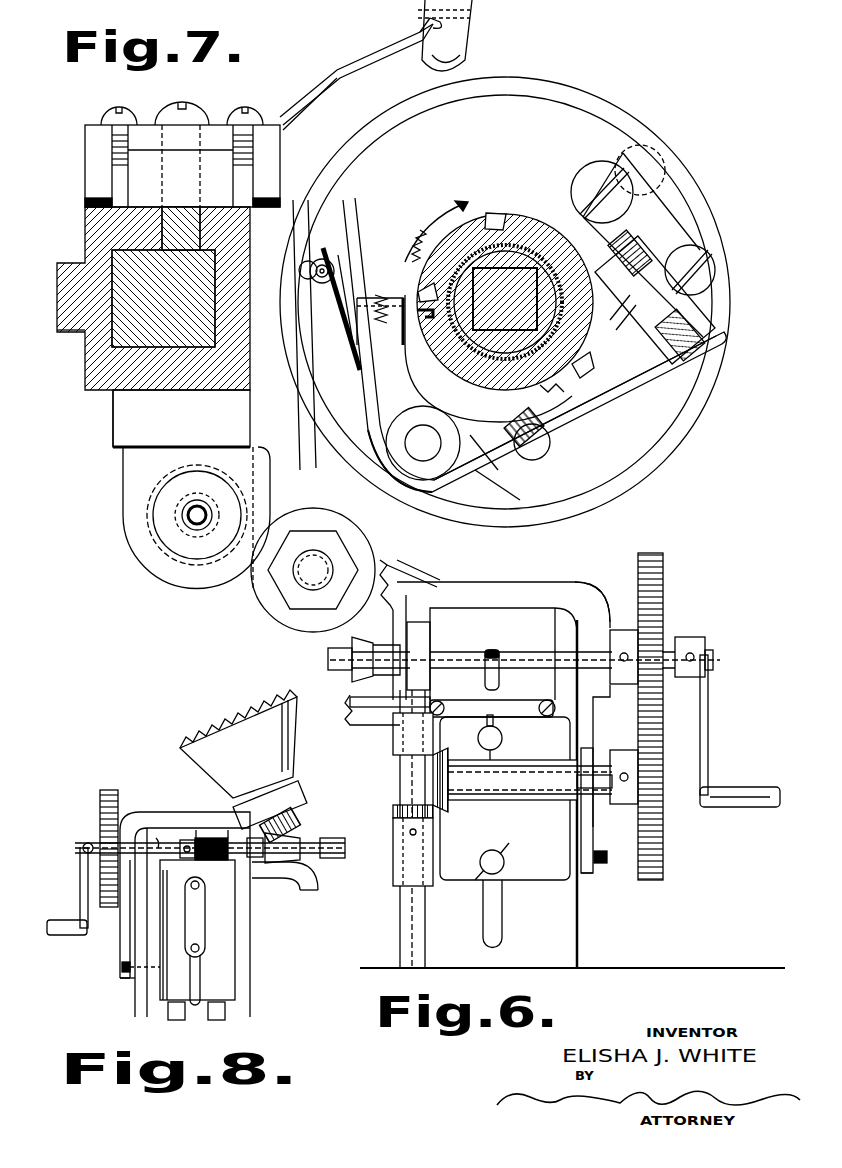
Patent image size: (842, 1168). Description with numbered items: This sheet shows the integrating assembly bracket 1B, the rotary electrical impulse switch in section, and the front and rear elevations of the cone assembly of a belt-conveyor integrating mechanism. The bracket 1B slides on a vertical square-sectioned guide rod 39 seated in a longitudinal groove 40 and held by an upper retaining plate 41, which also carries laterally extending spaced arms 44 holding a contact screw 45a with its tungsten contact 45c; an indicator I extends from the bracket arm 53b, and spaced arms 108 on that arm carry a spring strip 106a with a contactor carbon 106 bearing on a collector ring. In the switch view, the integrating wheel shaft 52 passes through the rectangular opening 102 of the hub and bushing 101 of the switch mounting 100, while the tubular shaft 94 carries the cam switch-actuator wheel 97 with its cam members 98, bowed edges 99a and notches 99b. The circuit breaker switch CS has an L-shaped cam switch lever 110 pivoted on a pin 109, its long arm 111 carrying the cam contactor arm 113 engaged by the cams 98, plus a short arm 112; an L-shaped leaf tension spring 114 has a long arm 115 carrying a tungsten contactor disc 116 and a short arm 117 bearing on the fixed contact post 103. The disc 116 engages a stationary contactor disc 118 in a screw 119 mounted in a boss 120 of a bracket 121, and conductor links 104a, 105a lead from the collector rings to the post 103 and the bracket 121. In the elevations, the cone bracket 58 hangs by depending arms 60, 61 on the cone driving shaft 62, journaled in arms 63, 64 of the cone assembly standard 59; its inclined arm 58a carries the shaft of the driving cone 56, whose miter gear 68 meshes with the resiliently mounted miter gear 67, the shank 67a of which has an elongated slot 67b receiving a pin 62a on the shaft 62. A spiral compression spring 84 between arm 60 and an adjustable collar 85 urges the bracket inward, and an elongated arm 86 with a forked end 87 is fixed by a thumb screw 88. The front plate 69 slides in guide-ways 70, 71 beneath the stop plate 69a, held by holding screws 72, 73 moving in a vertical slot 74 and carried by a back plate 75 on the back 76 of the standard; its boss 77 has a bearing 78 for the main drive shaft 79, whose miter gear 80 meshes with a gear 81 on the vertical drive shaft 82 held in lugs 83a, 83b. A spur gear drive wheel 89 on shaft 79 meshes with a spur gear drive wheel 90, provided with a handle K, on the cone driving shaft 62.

In FIG. 7, the arm 53b is at (148, 168).
In FIG. 7, the spaced arms 108 is at (292, 137).
In FIG. 7, the guide rod 39 is at (125, 330).
In FIG. 7, the upper retaining plate 41 is at (84, 380).
In FIG. 7, the longitudinal groove 40 is at (168, 350).
In FIG. 7, the integrating assembly bracket 1B is at (104, 440).
In FIG. 7, the laterally extending spaced arms 44 is at (163, 565).
In FIG. 7, the contact 45c is at (190, 518).
In FIG. 7, the contact screw 45a is at (196, 535).
In FIG. 7, the indicator I is at (305, 575).
In FIG. 7, the switch mounting 100 is at (690, 405).
In FIG. 7, the contactor carbon 106 is at (465, 57).
In FIG. 7, the spring strip 106a is at (355, 58).
In FIG. 7, the integrating wheel shaft 52 is at (535, 285).
In FIG. 7, the metal hub and bushing 101 is at (510, 262).
In FIG. 7, the tubular shaft 94 is at (560, 300).
In FIG. 7, the contactor teeth or cam members 98 is at (497, 214).
In FIG. 7, the bowed edges 99a is at (425, 276).
In FIG. 7, the notches 99b is at (555, 250).
In FIG. 7, the cam contactor arm 113 is at (400, 297).
In FIG. 7, the central rectangular opening 102 is at (520, 362).
In FIG. 7, the cam switch-actuator wheel 97 is at (568, 360).
In FIG. 7, the electric conductor link 105a is at (660, 175).
In FIG. 7, the screw 119 is at (660, 245).
In FIG. 7, the bracket 121 is at (638, 218).
In FIG. 7, the boss 120 is at (645, 308).
In FIG. 7, the tungsten contactor disc 116 is at (705, 333).
In FIG. 7, the stationary tungsten contactor disc 118 is at (695, 325).
In FIG. 7, the long arm 111 is at (365, 355).
In FIG. 7, the leaf tension spring 114 is at (410, 490).
In FIG. 7, the long arm 115 is at (620, 388).
In FIG. 7, the short arm 117 is at (300, 365).
In FIG. 7, the pin 109 is at (420, 446).
In FIG. 7, the fixed upright contact post 103 is at (330, 285).
In FIG. 7, the electric conductor link 104a is at (320, 260).
In FIG. 7, the short arm 112 is at (495, 443).
In FIG. 7, the cam switch lever 110 is at (477, 435).
In FIG. 7, the circuit breaker switch CS is at (474, 482).
In FIG. 6, the cone bracket 58 is at (530, 584).
In FIG. 8, the cone bracket 58 is at (152, 801).
In FIG. 6, the depending arm 61 is at (585, 596).
In FIG. 8, the depending arm 61 is at (137, 825).
In FIG. 6, the cone assembly standard 59 is at (600, 949).
In FIG. 8, the cone assembly standard 59 is at (256, 954).
In FIG. 6, the inclined arm 58a is at (425, 585).
In FIG. 8, the inclined arm 58a is at (285, 800).
In FIG. 6, the depending arm 60 is at (393, 632).
In FIG. 8, the depending arm 60 is at (245, 848).
In FIG. 6, the vertical guide-way 70 is at (420, 636).
In FIG. 6, the vertical guide-way 71 is at (555, 632).
In FIG. 6, the cone driving shaft 62 is at (328, 660).
In FIG. 8, the cone driving shaft 62 is at (178, 838).
In FIG. 6, the miter gear 67 is at (362, 670).
In FIG. 8, the miter gear 67 is at (280, 868).
In FIG. 6, the elongated slot 67b is at (390, 693).
In FIG. 6, the pin 62a is at (405, 660).
In FIG. 6, the transverse stop plate 69a is at (505, 712).
In FIG. 6, the cone assembly front plate 69 is at (560, 735).
In FIG. 6, the holding screw 72 is at (503, 738).
In FIG. 6, the elongated longitudinal boss 77 is at (528, 782).
In FIG. 6, the bearing 78 is at (547, 792).
In FIG. 6, the main drive shaft 79 is at (600, 792).
In FIG. 6, the miter gear 80 is at (433, 777).
In FIG. 6, the vertical drive shaft 82 is at (400, 790).
In FIG. 6, the miter gear 81 is at (393, 810).
In FIG. 6, the lateral lug 83a is at (395, 740).
In FIG. 6, the lateral lug 83b is at (393, 863).
In FIG. 6, the holding screw 73 is at (504, 860).
In FIG. 6, the vertical slot 74 is at (495, 930).
In FIG. 8, the vertical slot 74 is at (200, 965).
In FIG. 6, the elongated arm 86 is at (593, 838).
In FIG. 8, the elongated arm 86 is at (132, 925).
In FIG. 6, the thumb screw 88 is at (603, 862).
In FIG. 8, the thumb screw 88 is at (122, 966).
In FIG. 6, the forked end 87 is at (588, 874).
In FIG. 8, the forked end 87 is at (130, 978).
In FIG. 6, the spur gear drive wheel 90 is at (662, 568).
In FIG. 8, the spur gear drive wheel 90 is at (105, 790).
In FIG. 6, the spur gear drive wheel 89 is at (640, 752).
In FIG. 6, the handle K is at (740, 795).
In FIG. 8, the handle K is at (60, 920).
In FIG. 6, the arm 63 is at (370, 720).
In FIG. 8, the arm 63 is at (318, 884).
In FIG. 8, the adjustable collar 85 is at (190, 838).
In FIG. 8, the spiral compression spring 84 is at (210, 860).
In FIG. 8, the slidable back plate 75 is at (205, 918).
In FIG. 8, the back 76 is at (220, 982).
In FIG. 8, the arm 64 is at (158, 850).
In FIG. 8, the driving cone 56 is at (225, 735).
In FIG. 8, the miter gear 68 is at (296, 822).
In FIG. 8, the shank 67a is at (262, 866).